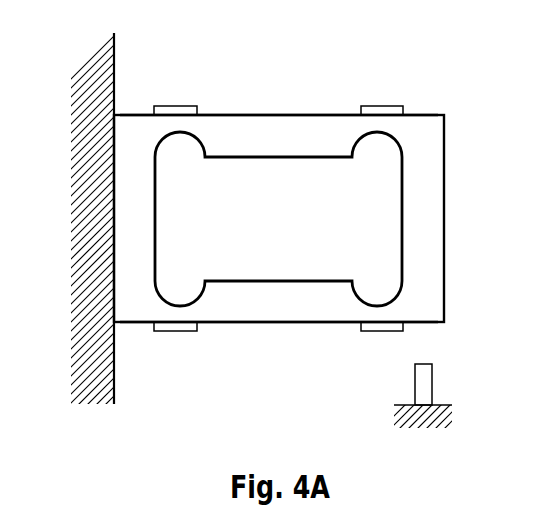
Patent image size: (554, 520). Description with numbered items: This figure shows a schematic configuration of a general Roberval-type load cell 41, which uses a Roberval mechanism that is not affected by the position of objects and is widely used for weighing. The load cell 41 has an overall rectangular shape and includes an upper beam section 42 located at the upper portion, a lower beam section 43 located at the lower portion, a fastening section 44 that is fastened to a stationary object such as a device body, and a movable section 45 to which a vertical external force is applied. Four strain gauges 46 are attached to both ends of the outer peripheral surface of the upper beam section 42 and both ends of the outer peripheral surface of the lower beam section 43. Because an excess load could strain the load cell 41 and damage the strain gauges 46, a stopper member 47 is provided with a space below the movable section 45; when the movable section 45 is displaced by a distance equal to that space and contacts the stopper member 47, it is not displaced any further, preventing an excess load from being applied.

The Roberval-type load cell 41 is at (308, 200).
The upper beam section 42 is at (264, 130).
The lower beam section 43 is at (270, 305).
The fastening section 44 is at (135, 207).
The movable section 45 is at (425, 198).
The strain gauges 46 is at (176, 105).
The stopper member 47 is at (427, 381).